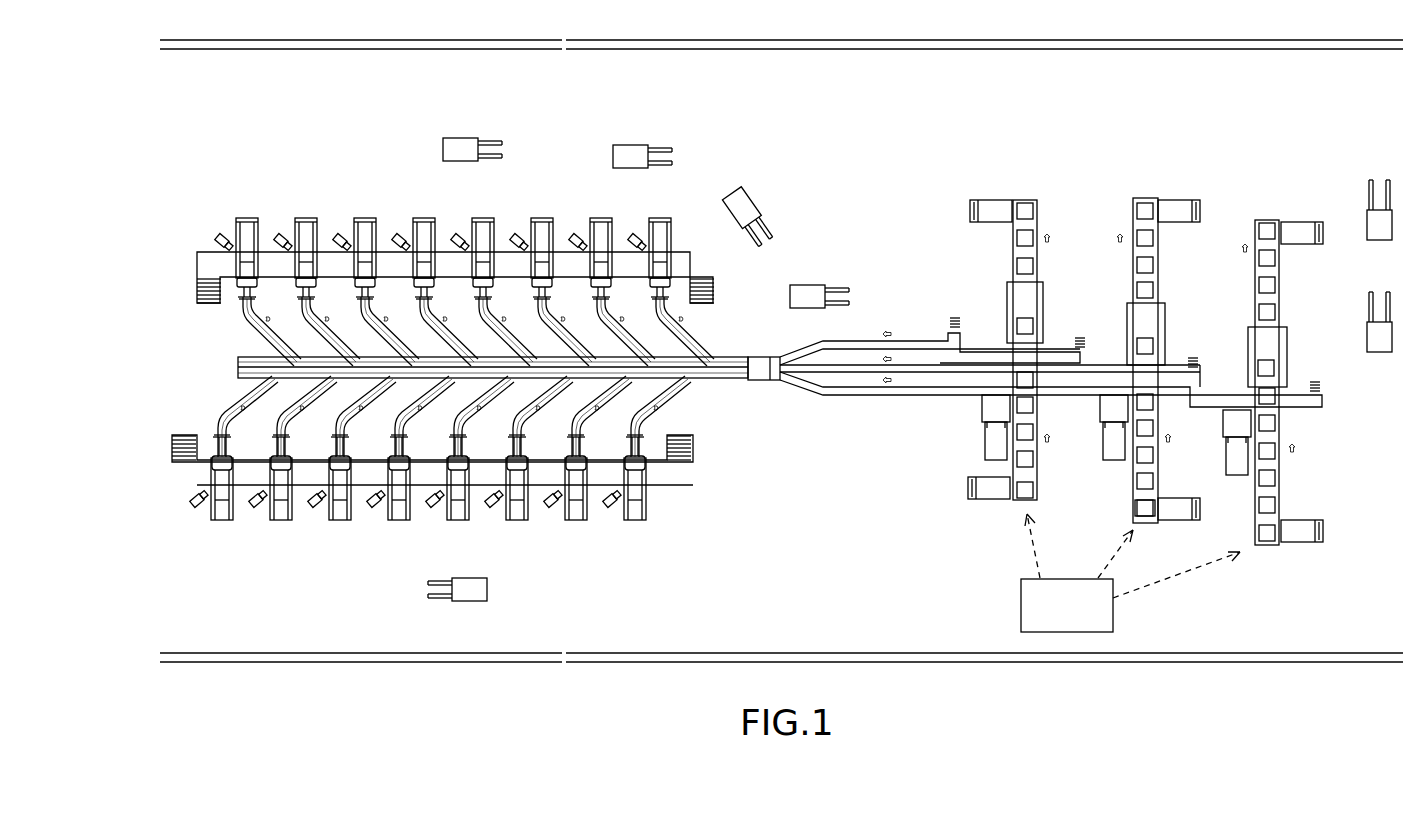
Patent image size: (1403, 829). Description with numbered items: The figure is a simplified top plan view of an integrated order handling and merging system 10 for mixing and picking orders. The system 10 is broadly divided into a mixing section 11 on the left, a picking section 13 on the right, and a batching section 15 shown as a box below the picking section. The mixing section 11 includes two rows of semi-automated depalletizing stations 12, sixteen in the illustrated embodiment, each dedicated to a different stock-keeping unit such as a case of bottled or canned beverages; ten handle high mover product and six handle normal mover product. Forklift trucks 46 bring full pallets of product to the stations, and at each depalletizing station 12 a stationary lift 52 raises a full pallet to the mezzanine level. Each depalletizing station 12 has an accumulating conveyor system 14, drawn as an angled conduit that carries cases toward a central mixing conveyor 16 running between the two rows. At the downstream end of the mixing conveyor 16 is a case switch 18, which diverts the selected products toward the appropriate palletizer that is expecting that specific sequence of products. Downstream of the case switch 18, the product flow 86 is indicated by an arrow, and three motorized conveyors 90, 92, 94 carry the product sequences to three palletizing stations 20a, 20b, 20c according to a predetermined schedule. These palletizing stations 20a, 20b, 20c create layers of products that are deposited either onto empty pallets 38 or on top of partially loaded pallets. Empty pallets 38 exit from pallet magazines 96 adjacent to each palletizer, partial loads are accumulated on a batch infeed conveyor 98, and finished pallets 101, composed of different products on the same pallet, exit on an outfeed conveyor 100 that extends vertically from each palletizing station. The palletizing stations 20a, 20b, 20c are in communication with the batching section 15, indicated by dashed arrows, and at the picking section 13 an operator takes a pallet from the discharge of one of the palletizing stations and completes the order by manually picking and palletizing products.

The integrated order handling/merging system 10 is at (816, 136).
The mixing section 11 is at (402, 180).
The semi-automated depalletizing station 12 is at (248, 228).
The picking section 13 is at (1190, 155).
The accumulating conveyor system 14 is at (225, 408).
The batching section 15 is at (1077, 616).
The mixing conveyor 16 is at (228, 360).
The case switch 18 is at (765, 405).
The palletizing station 20a is at (1040, 302).
The palletizing station 20b is at (1160, 324).
The palletizing station 20c is at (1283, 357).
The pallet 38 is at (1143, 512).
The forklift truck 46 is at (473, 138).
The stationary lift 52 is at (332, 228).
The transfer conveyor 86 is at (887, 318).
The motorized conveyor 90 is at (922, 340).
The motorized conveyor 92 is at (915, 372).
The motorized conveyor 94 is at (960, 395).
The pallet magazine 96 is at (1105, 413).
The batch infeed conveyor 98 is at (1033, 476).
The outfeed conveyor 100 is at (1033, 228).
The finished pallet 101 is at (1150, 258).